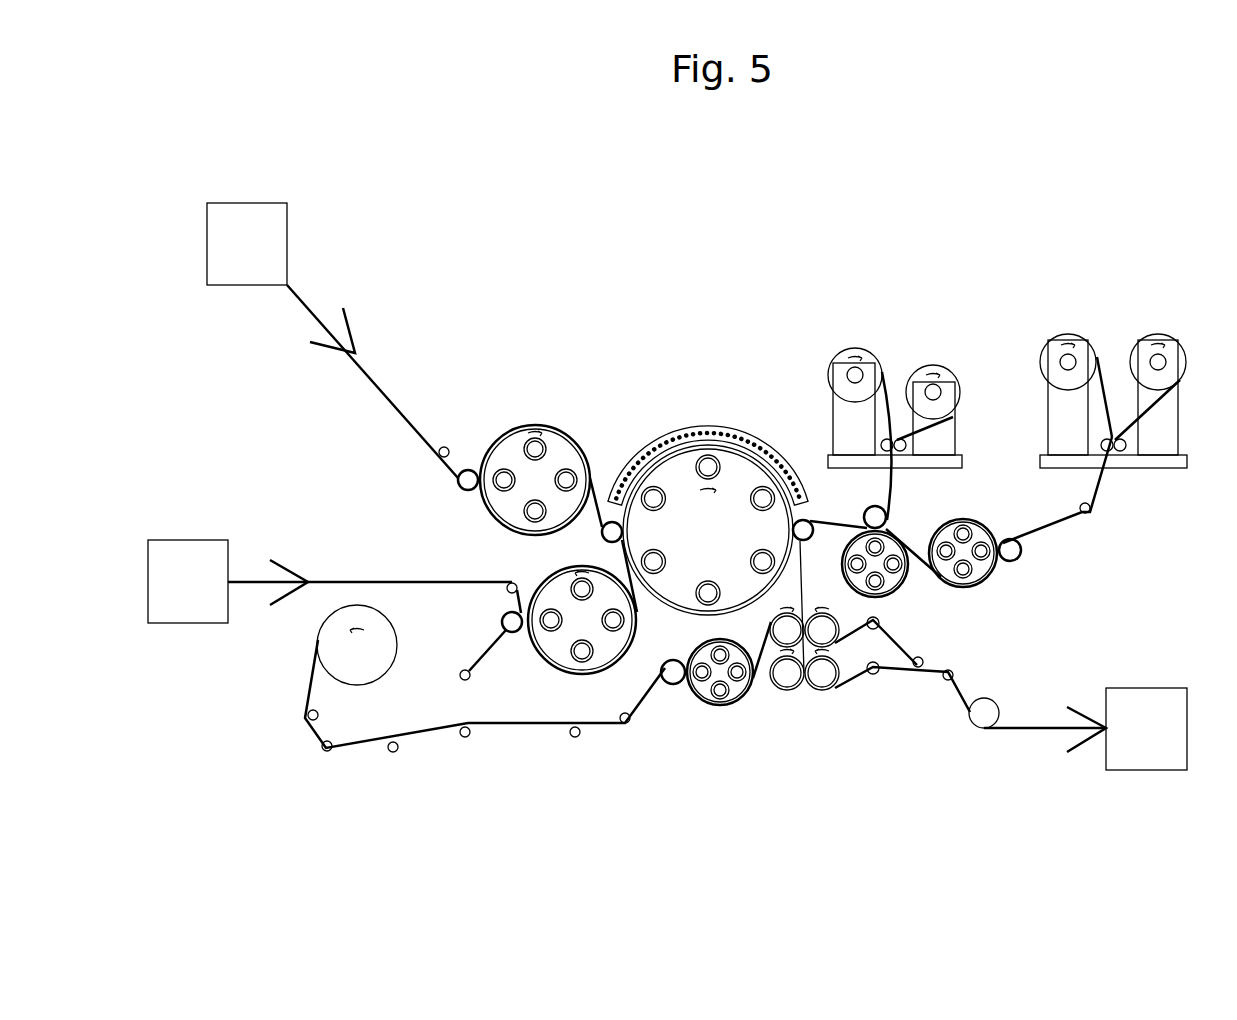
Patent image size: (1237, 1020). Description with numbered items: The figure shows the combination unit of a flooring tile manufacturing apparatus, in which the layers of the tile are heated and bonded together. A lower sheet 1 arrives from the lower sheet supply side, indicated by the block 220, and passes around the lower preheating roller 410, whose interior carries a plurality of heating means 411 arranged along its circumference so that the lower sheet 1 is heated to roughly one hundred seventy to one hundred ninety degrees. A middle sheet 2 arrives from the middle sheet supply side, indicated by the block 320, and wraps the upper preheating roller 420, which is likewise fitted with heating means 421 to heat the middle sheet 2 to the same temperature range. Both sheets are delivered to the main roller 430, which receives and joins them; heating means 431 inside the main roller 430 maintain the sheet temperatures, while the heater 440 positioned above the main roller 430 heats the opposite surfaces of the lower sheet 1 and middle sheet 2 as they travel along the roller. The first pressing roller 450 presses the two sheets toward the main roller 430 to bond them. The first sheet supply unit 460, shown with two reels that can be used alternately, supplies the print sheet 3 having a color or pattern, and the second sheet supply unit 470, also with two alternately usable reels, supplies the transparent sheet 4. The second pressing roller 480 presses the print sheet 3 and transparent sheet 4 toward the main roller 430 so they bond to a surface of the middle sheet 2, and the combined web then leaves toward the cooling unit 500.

The lower sheet 1 is at (348, 582).
The middle sheet 2 is at (385, 380).
The print sheet 3 is at (890, 490).
The transparent sheet 4 is at (1100, 482).
The first web supply 220 is at (188, 581).
The second web supply 320 is at (247, 244).
The lower preheating roller 410 is at (547, 662).
The heating means 411 is at (613, 624).
The upper preheating roller 420 is at (498, 432).
The heating means 421 is at (566, 478).
The main roller 430 is at (708, 530).
The heating means 431 is at (703, 462).
The heater 440 is at (750, 433).
The first pressing roller 450 is at (612, 537).
The first sheet supply unit 460 is at (913, 305).
The second sheet supply unit 470 is at (1120, 295).
The second pressing roller 480 is at (805, 518).
The cooling unit 500 is at (1146, 729).